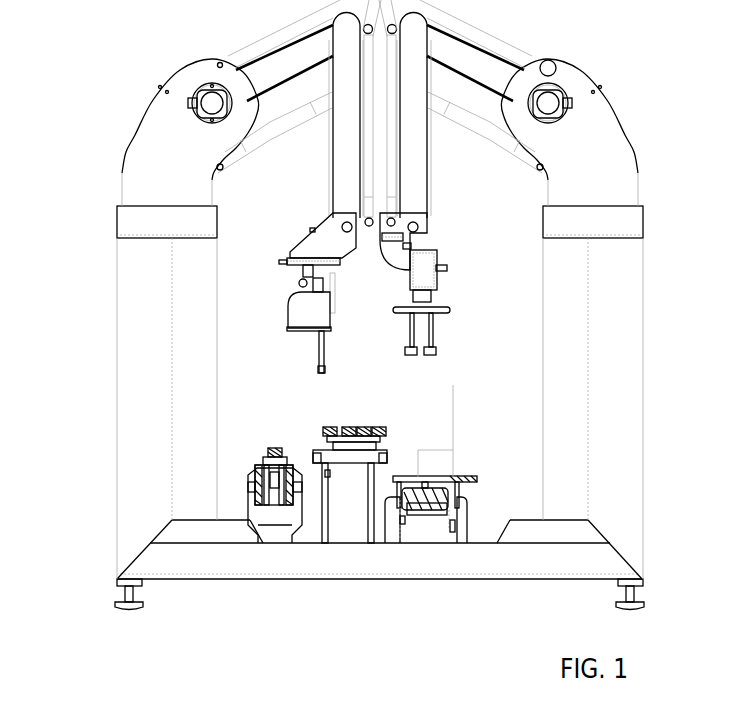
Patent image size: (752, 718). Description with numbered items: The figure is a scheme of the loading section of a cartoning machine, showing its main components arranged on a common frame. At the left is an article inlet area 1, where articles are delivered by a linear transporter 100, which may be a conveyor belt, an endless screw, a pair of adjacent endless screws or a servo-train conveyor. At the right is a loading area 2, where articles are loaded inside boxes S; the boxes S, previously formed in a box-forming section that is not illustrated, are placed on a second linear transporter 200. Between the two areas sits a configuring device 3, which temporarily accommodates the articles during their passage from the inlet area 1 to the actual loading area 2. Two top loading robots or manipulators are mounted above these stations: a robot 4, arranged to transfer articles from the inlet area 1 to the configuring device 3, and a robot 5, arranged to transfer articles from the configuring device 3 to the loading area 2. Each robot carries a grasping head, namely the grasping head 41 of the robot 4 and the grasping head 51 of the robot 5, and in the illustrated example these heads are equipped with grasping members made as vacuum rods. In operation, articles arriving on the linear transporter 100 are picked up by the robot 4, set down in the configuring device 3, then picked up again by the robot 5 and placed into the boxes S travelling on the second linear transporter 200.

The article inlet area 1 is at (258, 419).
The loading area 2 is at (436, 410).
The configuring device 3 is at (358, 415).
The robot 4 is at (130, 81).
The robot 5 is at (613, 63).
The grasping head 41 is at (268, 299).
The grasping head 51 is at (465, 301).
The box S is at (438, 463).
The linear transporter 100 is at (272, 487).
The second linear transporter 200 is at (423, 500).